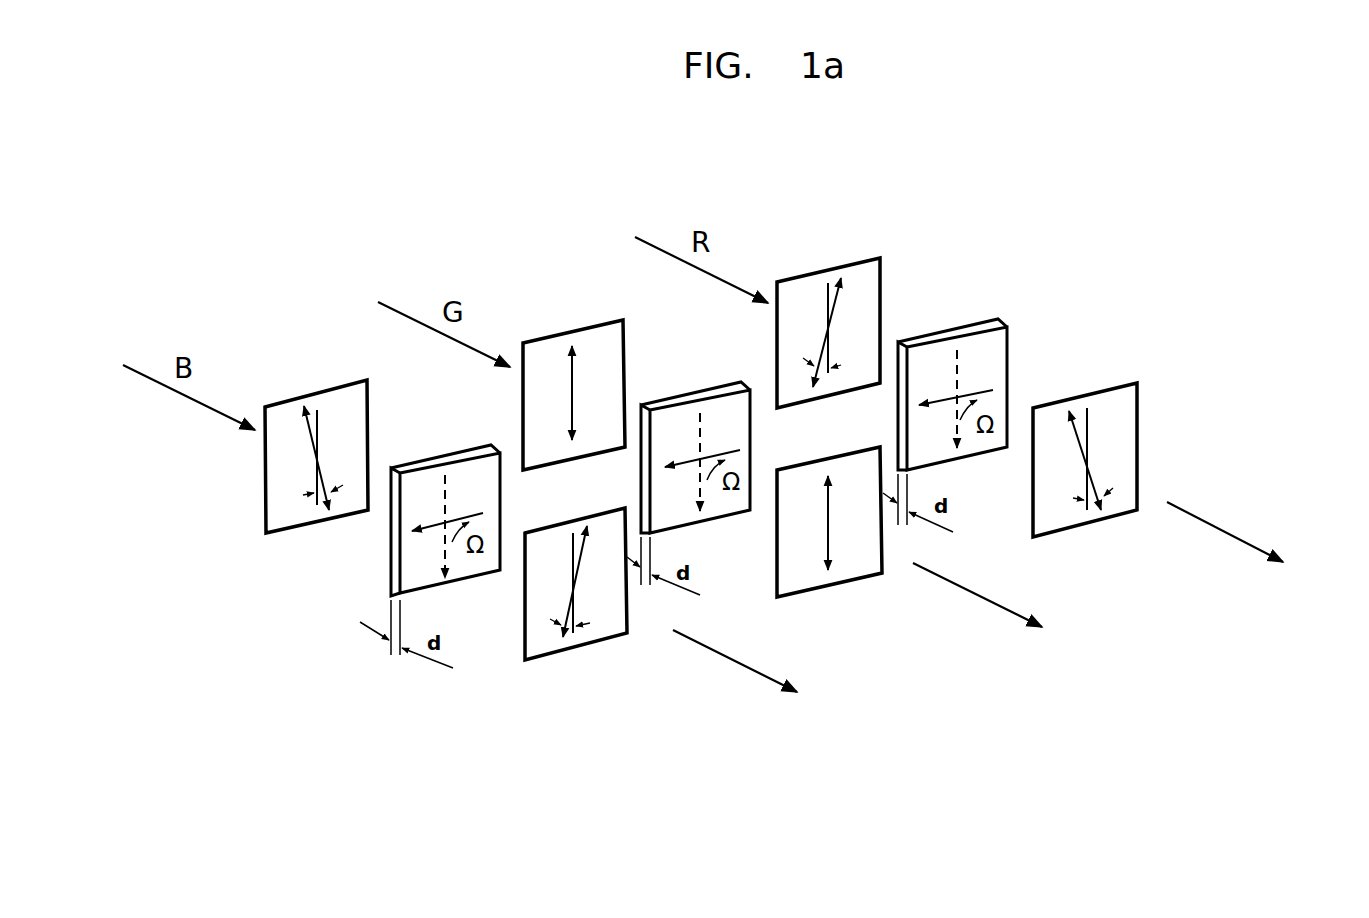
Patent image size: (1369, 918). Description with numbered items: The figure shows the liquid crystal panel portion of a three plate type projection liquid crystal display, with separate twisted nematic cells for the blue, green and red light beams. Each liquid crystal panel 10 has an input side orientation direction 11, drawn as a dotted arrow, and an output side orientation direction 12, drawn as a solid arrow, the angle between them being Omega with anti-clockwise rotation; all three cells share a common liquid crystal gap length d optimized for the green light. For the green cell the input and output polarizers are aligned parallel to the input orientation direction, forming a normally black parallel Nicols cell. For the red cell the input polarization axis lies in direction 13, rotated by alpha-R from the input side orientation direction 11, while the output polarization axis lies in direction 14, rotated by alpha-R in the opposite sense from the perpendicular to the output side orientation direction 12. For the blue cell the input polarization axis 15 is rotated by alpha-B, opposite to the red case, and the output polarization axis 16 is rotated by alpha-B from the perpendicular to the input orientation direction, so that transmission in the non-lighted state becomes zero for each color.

The liquid crystal panel 10 is at (977, 287).
The input side orientation direction 11 is at (993, 483).
The output side orientation direction 12 is at (400, 428).
The input side polarization axis direction for R light 13 is at (835, 298).
The output side polarization axis direction for R light 14 is at (1092, 481).
The input side polarization axis for B light 15 is at (316, 437).
The output side polarization axis for B light 16 is at (570, 605).